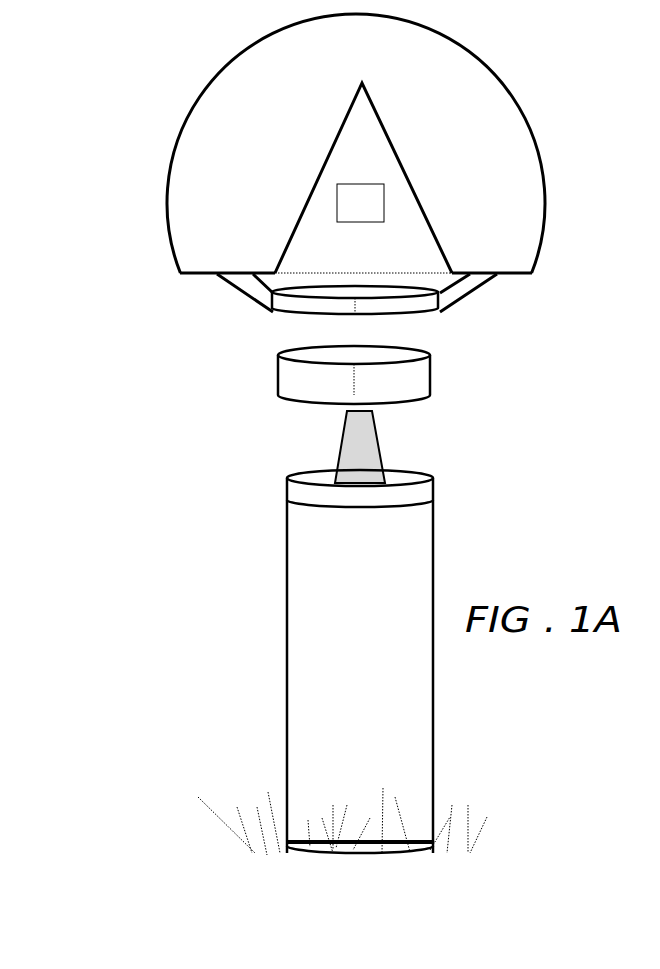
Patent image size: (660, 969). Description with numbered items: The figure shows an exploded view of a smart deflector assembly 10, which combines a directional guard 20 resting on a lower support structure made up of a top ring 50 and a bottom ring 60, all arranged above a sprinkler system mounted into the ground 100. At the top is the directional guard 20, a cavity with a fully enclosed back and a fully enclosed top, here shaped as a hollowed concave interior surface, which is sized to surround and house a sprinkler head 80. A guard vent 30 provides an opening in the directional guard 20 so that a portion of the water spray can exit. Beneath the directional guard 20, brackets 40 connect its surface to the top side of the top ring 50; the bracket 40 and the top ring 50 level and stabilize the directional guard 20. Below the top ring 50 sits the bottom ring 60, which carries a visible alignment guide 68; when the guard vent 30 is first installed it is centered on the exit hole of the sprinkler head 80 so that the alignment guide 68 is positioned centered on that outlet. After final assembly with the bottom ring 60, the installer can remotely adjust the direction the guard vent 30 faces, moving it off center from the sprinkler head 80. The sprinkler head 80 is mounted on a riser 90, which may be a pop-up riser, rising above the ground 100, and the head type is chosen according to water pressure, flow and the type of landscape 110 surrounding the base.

The smart deflector assembly 10 is at (100, 138).
The directional guard 20 is at (550, 170).
The guard vent 30 is at (363, 178).
The bracket 40 is at (468, 298).
The top ring 50 is at (288, 314).
The bottom ring 60 is at (272, 383).
The visible alignment guide 68 is at (365, 380).
The sprinkler head 80 is at (382, 448).
The riser 90 is at (281, 530).
The ground 100 is at (497, 853).
The landscape 110 is at (242, 850).